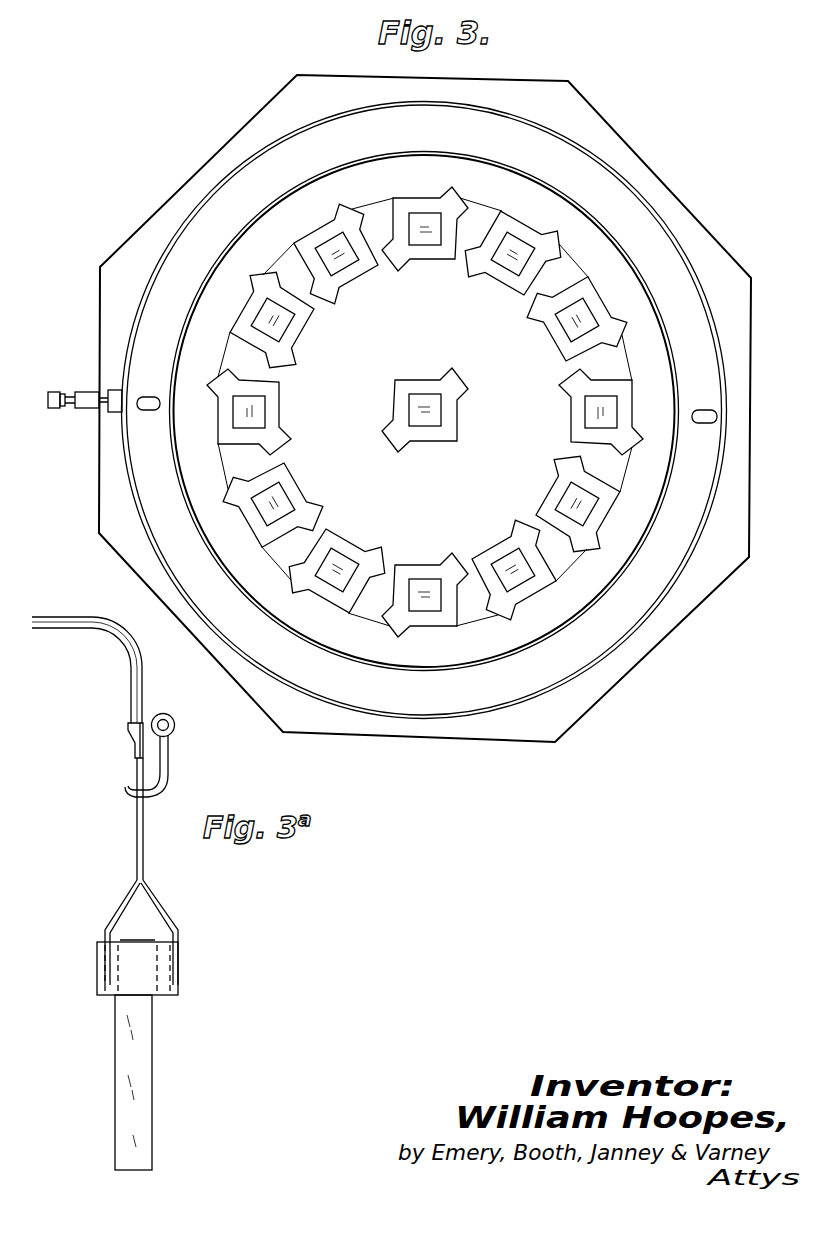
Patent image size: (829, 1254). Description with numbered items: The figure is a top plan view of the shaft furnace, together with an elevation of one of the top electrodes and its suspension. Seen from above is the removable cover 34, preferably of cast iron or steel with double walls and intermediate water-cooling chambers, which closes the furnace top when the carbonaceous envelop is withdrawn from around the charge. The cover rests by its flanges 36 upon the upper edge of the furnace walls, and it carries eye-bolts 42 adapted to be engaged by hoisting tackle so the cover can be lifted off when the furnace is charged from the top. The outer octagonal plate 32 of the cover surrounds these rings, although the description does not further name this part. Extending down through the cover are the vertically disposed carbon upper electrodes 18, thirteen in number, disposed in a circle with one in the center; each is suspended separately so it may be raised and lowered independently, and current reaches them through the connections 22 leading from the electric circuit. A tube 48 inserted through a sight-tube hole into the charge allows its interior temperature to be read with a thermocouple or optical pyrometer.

In FIG. 3, the upper electrode 18 is at (422, 395).
In FIG. 3A, the upper electrode 18 is at (133, 1050).
In FIG. 3A, the connection 22 is at (76, 626).
In FIG. 3, the octagonal plate 32 is at (165, 258).
In FIG. 3, the removable cover 34 is at (258, 237).
In FIG. 3, the flange 36 is at (640, 213).
In FIG. 3, the eye-bolt 42 is at (150, 397).
In FIG. 3, the tube 48 is at (96, 401).